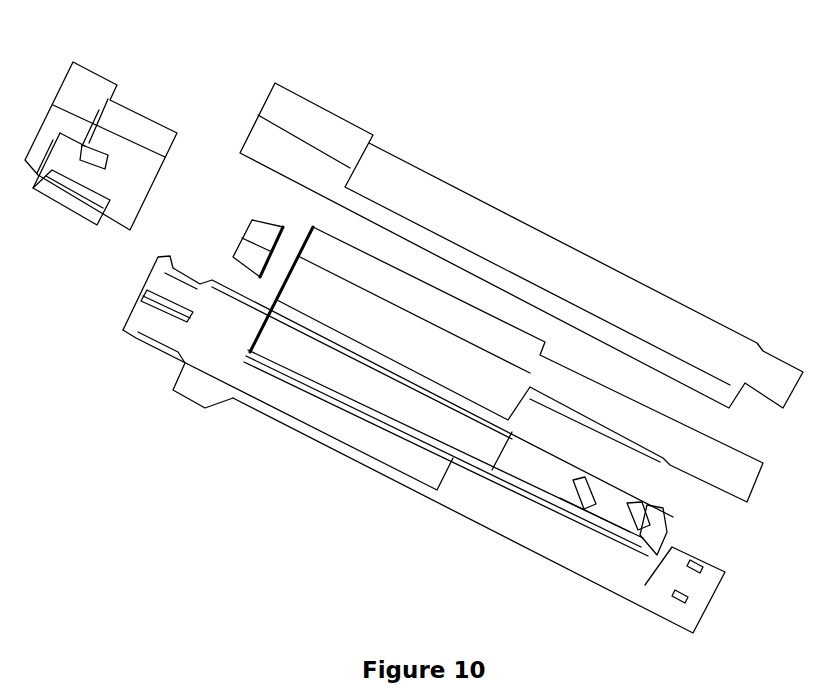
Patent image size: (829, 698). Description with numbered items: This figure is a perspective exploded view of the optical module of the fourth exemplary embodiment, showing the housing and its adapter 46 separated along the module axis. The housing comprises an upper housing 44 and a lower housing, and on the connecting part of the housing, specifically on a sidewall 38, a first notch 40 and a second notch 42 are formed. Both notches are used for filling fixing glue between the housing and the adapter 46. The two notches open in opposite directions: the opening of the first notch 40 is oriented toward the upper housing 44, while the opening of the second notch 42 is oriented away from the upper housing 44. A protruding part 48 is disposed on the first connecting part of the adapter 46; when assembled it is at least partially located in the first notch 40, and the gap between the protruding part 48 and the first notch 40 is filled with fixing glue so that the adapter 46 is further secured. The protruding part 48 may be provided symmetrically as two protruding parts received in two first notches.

The sidewall 38 is at (313, 416).
The first notch 40 is at (192, 272).
The second notch 42 is at (154, 343).
The upper housing 44 is at (437, 205).
The adapter 46 is at (43, 146).
The protruding part 48 is at (102, 150).